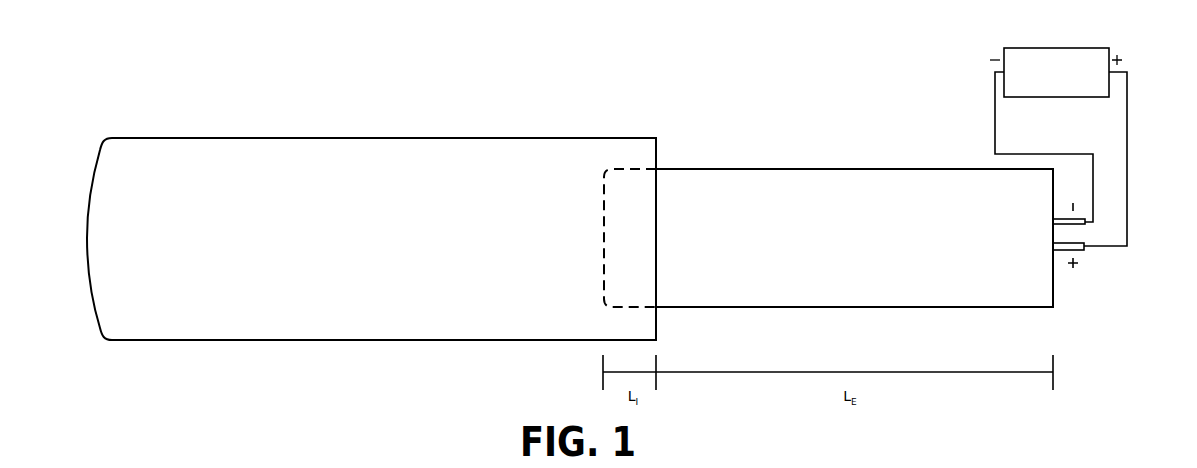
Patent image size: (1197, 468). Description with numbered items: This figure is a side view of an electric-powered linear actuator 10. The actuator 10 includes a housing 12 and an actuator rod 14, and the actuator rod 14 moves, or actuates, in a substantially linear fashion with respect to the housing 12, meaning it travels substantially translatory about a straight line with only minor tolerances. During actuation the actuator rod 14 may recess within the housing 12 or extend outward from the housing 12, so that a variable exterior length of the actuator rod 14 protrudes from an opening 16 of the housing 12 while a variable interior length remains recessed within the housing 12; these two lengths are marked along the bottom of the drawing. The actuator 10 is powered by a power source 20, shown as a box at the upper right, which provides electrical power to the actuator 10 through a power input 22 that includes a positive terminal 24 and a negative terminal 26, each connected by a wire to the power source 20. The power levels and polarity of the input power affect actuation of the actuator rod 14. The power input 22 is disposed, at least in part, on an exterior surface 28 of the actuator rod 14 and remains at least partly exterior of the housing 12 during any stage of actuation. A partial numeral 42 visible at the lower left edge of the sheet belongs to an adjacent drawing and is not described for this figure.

The linear actuator 10 is at (560, 112).
The housing 12 is at (318, 136).
The actuator rod 14 is at (776, 168).
The opening 16 is at (659, 168).
The power source 20 is at (1003, 48).
The power input 22 is at (1075, 276).
The positive terminal 24 is at (1088, 250).
The negative terminal 26 is at (1068, 228).
The exterior surface 28 is at (1051, 196).
The partial numeral of adjacent figure 42 is at (142, 466).